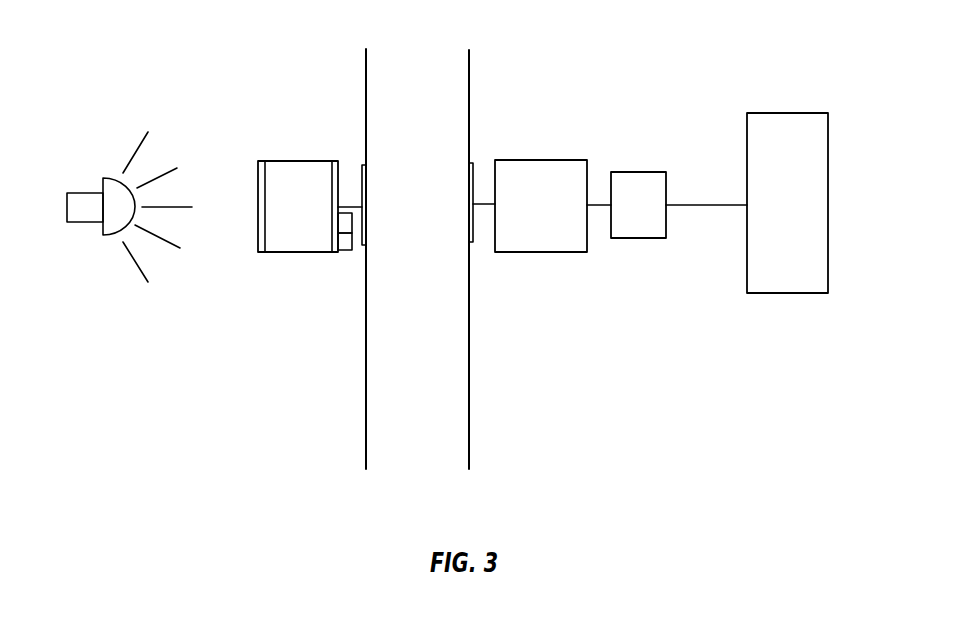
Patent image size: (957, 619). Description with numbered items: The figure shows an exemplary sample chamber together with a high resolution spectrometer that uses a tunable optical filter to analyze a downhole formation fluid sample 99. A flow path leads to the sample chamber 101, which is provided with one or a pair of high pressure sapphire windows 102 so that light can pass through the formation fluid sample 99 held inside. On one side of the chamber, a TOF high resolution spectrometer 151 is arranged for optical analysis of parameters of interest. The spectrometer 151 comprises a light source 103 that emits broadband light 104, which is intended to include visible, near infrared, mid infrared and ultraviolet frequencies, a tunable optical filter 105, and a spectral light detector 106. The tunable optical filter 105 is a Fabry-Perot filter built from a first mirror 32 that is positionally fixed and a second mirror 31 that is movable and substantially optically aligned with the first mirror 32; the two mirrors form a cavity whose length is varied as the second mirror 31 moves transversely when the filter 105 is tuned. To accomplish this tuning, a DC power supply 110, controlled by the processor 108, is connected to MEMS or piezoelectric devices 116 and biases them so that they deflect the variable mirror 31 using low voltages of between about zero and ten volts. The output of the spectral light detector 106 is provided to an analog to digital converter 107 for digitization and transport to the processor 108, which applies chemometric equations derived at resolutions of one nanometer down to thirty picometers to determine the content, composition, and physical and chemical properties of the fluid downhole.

The formation fluid sample 99 is at (460, 50).
The sample chamber 101 is at (469, 102).
The high pressure sapphire windows 102 is at (363, 168).
The light source 103 is at (108, 182).
The broadband light 104 is at (173, 166).
The tunable optical filter 105 is at (282, 178).
The spectral light detector 106 is at (567, 158).
The analog to digital converter 107 is at (645, 171).
The processor 108 is at (800, 113).
The DC power supply 110 is at (352, 245).
The MEMS or piezoelectric devices 116 is at (352, 222).
The TOF high resolution spectrometer 151 is at (341, 272).
The second mirror 31 is at (330, 233).
The first mirror 32 is at (258, 242).